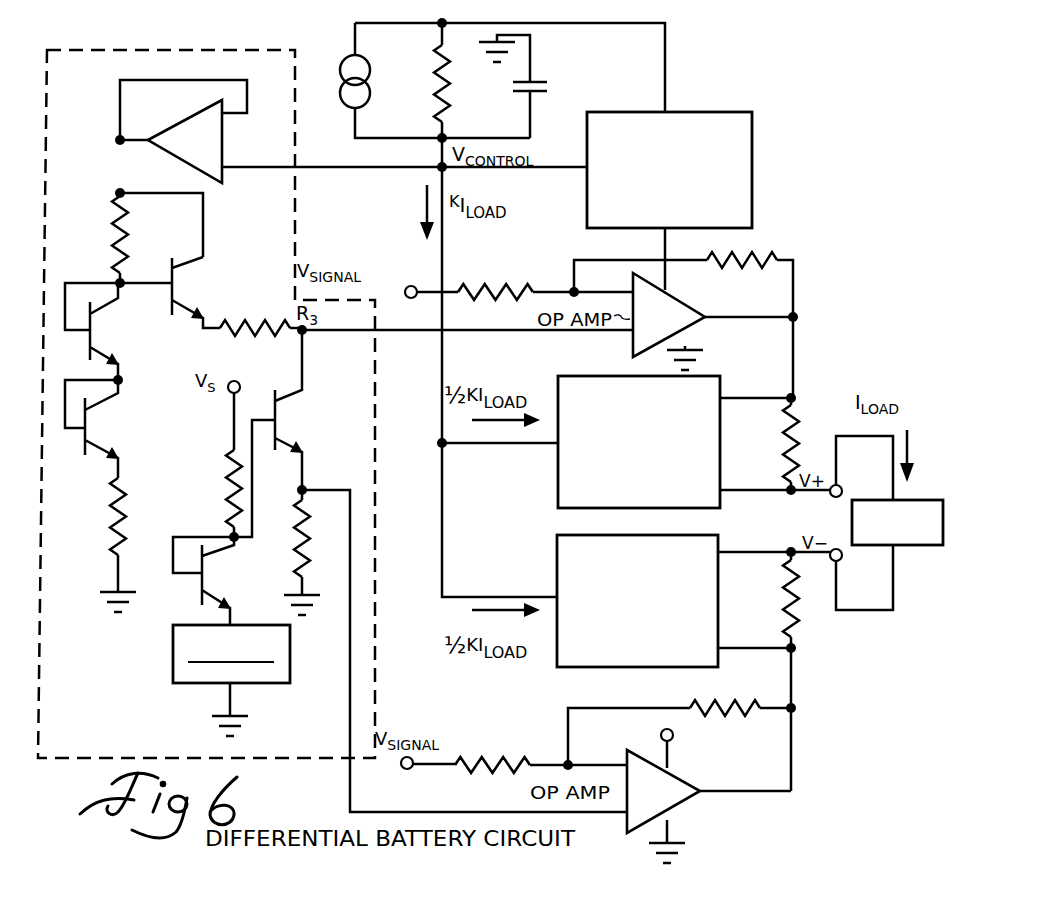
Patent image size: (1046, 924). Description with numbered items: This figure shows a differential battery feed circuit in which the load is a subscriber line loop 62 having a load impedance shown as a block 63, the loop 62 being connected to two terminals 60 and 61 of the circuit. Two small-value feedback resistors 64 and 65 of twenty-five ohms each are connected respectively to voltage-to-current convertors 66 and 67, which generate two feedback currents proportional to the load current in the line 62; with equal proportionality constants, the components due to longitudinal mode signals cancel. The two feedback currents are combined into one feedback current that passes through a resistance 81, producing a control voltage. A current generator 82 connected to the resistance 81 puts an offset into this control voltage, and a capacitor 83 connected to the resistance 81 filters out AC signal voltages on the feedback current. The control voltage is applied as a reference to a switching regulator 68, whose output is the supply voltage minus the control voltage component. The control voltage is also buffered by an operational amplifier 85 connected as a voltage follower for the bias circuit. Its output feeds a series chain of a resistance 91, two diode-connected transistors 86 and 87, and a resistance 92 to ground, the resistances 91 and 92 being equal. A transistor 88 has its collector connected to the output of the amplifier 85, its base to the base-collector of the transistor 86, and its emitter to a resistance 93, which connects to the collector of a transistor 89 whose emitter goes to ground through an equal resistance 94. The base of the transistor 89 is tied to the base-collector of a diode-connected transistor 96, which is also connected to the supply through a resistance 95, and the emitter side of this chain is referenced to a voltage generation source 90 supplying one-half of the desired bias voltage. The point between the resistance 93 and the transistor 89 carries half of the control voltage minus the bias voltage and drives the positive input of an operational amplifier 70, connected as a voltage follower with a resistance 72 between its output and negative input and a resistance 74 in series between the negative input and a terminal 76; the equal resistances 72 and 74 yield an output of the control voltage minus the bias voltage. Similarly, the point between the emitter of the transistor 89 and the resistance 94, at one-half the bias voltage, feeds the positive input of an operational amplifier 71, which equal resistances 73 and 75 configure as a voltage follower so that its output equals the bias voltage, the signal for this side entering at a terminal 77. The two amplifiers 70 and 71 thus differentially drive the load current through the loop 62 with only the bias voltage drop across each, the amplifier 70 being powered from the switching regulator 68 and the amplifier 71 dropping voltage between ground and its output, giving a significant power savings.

The terminal 60 is at (841, 486).
The terminal 61 is at (843, 560).
The subscriber line loop 62 is at (889, 610).
The load impedance 63 is at (915, 546).
The feedback resistor 64 is at (802, 402).
The feedback resistor 65 is at (780, 616).
The voltage-to-current convertor 66 is at (555, 471).
The voltage-to-current convertor 67 is at (555, 575).
The switching regulator 68 is at (752, 137).
The operational amplifier 70 is at (707, 322).
The operational amplifier 71 is at (691, 800).
The resistance 72 is at (767, 265).
The resistance 73 is at (738, 700).
The resistance 74 is at (498, 287).
The resistance 75 is at (498, 756).
The terminal 76 is at (406, 285).
The signal input terminal 77 is at (400, 767).
The resistance 81 is at (448, 94).
The current generator 82 is at (346, 58).
The capacitor 83 is at (543, 76).
The operational amplifier 85 is at (195, 118).
The diode-connected transistor 86 is at (95, 344).
The diode-connected transistor 87 is at (93, 441).
The transistor 88 is at (190, 301).
The transistor 89 is at (295, 443).
The voltage generation source 90 is at (291, 653).
The resistance 91 is at (127, 255).
The resistance 92 is at (126, 541).
The resistance 93 is at (232, 320).
The resistance 94 is at (294, 568).
The resistance 95 is at (222, 478).
The diode-connected transistor 96 is at (223, 600).